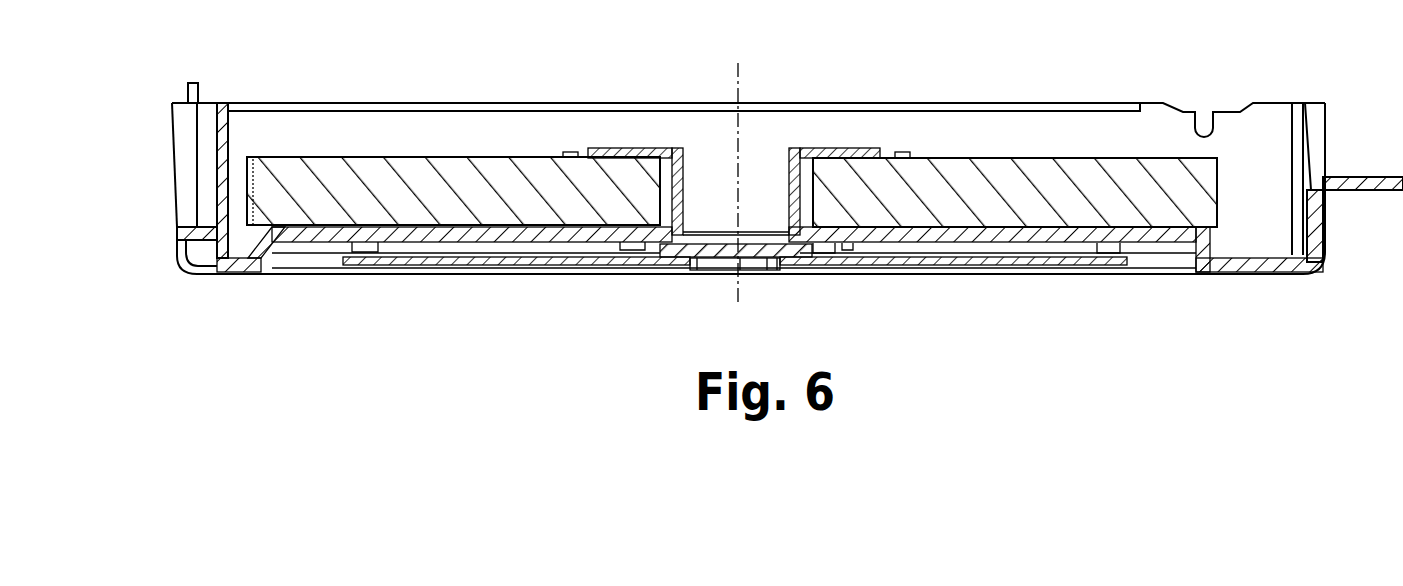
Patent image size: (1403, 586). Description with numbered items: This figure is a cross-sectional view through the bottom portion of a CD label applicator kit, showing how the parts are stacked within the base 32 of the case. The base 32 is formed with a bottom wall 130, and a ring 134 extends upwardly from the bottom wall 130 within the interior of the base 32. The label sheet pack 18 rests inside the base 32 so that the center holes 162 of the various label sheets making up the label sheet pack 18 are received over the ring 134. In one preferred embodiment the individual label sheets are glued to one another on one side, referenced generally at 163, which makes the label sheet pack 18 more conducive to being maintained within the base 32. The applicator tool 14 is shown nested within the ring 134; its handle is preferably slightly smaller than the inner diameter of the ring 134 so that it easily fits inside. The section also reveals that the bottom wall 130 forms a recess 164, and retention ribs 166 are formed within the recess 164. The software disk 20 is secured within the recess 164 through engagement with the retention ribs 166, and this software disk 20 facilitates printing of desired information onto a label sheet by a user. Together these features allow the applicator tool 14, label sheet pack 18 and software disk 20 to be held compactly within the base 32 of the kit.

The applicator tool 14 is at (813, 140).
The label sheet pack 18 is at (399, 150).
The software disk 20 is at (1062, 280).
The base 32 is at (168, 233).
The bottom wall 130 is at (259, 280).
The ring 134 is at (662, 187).
The center holes 162 is at (790, 146).
The glued side 163 is at (247, 192).
The recess 164 is at (1187, 255).
The retention ribs 166 is at (775, 272).